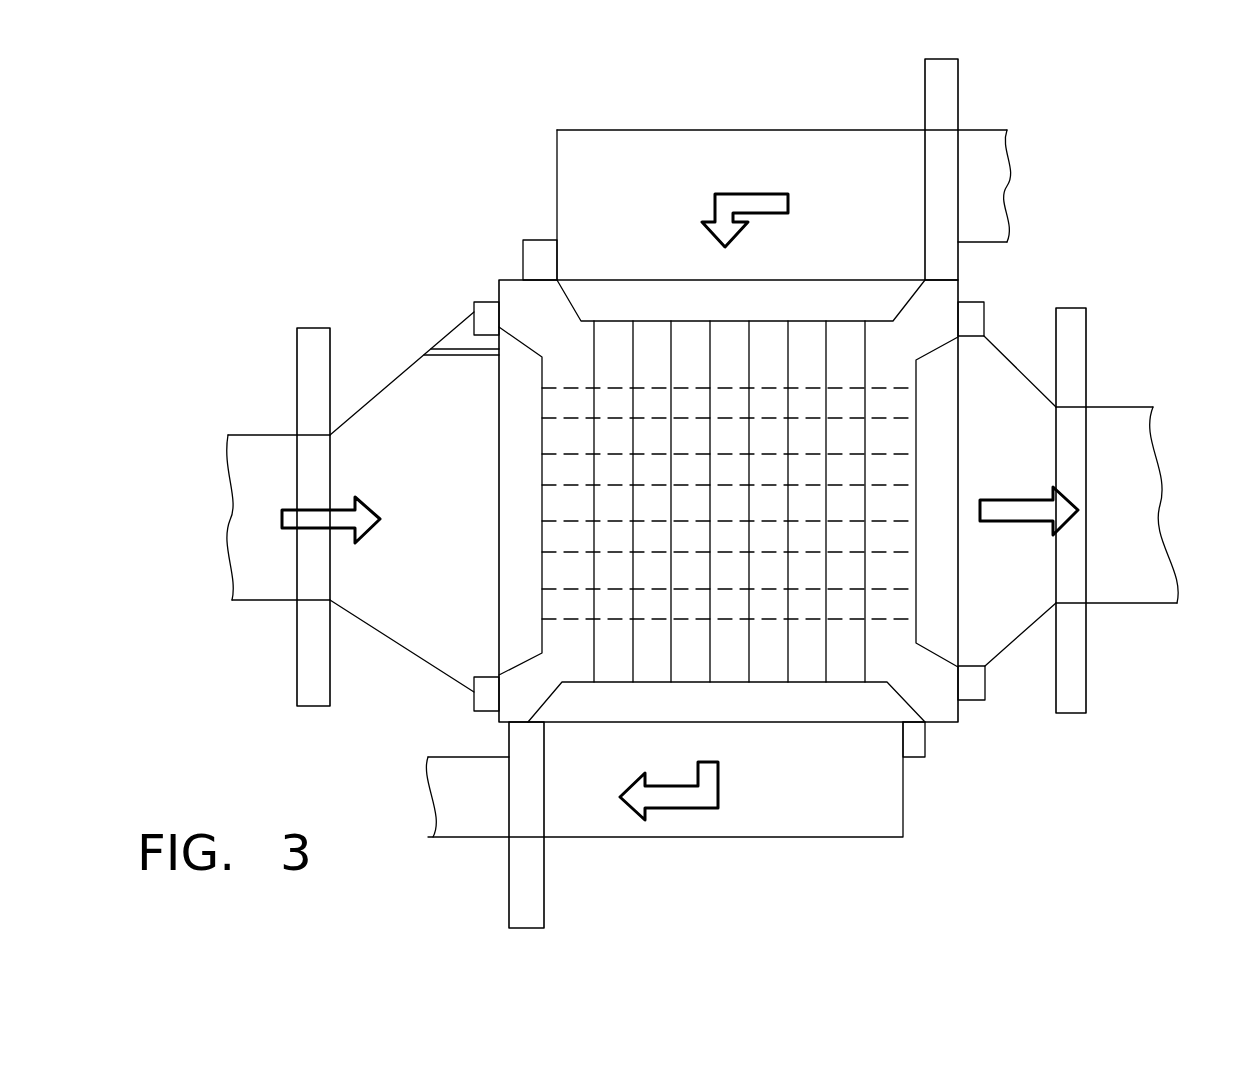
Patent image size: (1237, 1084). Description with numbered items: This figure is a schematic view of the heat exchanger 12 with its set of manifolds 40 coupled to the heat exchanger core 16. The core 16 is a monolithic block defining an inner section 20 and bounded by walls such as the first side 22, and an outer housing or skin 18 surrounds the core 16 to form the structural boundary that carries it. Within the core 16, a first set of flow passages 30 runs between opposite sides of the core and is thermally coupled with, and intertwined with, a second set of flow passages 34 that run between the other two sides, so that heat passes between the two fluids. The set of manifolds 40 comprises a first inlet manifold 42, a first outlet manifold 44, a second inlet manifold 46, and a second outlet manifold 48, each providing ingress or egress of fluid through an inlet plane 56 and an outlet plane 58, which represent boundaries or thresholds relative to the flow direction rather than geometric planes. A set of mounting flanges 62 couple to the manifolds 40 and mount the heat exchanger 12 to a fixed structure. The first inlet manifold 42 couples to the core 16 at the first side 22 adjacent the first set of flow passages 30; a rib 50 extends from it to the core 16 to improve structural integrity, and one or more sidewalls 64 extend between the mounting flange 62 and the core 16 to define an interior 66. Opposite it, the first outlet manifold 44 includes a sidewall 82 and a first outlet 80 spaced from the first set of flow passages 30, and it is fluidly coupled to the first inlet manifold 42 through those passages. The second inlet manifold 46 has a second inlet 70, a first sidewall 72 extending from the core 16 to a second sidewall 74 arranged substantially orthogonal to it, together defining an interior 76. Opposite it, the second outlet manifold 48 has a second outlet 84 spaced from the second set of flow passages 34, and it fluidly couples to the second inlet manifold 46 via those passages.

The heat exchanger 12 is at (330, 141).
The heat exchanger core 16 is at (935, 317).
The skin 18 is at (960, 713).
The inner section 20 is at (500, 278).
The first side 22 is at (843, 676).
The first set of flow passages 30 is at (577, 520).
The second set of flow passages 34 is at (615, 340).
The set of manifolds 40 is at (667, 125).
The first inlet manifold 42 is at (415, 657).
The first outlet manifold 44 is at (995, 342).
The second inlet manifold 46 is at (790, 128).
The second outlet manifold 48 is at (842, 840).
The rib 50 is at (463, 347).
The inlet plane 56 is at (925, 177).
The outlet plane 58 is at (732, 280).
The mounting flange 62 is at (959, 77).
The sidewall 64 is at (412, 362).
The interior 66 is at (455, 447).
The second inlet 70 is at (959, 177).
The first sidewall 72 is at (558, 173).
The second sidewall 74 is at (598, 129).
The interior 76 is at (684, 207).
The first outlet 80 is at (1088, 445).
The sidewall 82 is at (1043, 613).
The second outlet 84 is at (508, 808).